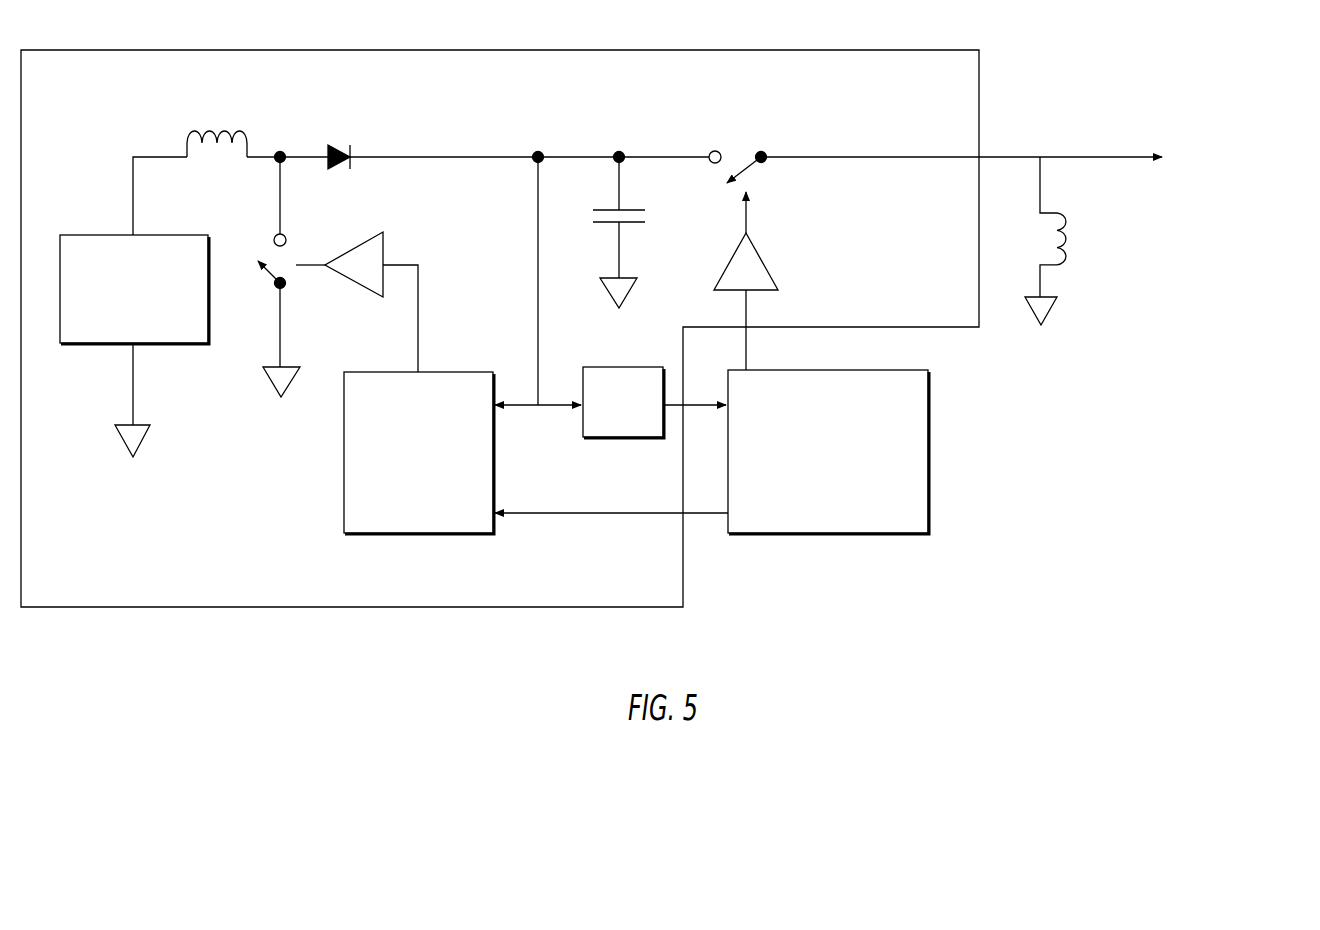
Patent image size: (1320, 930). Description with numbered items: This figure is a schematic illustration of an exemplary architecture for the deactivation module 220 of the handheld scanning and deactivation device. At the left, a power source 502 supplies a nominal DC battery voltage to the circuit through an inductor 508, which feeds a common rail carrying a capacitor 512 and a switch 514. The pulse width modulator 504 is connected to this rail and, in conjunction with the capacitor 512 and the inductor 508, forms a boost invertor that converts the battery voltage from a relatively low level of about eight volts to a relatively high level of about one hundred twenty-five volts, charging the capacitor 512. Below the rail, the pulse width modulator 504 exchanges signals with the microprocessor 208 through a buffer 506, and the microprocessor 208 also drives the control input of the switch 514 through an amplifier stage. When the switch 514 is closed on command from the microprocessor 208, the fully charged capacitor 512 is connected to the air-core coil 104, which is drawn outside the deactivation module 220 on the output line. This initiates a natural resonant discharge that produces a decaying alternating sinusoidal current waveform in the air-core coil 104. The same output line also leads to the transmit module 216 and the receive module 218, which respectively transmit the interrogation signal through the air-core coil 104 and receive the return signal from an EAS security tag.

The deactivation module 220 is at (502, 110).
The power source 502 is at (117, 320).
The inductor 508 is at (202, 113).
The capacitor 512 is at (578, 232).
The switch 514 is at (758, 139).
The air-core coil 104 is at (1038, 248).
The transmit module 216 is at (1216, 156).
The receive module 218 is at (1216, 240).
The pulse width modulator 504 is at (402, 493).
The buffer 506 is at (607, 427).
The microprocessor 208 is at (812, 480).